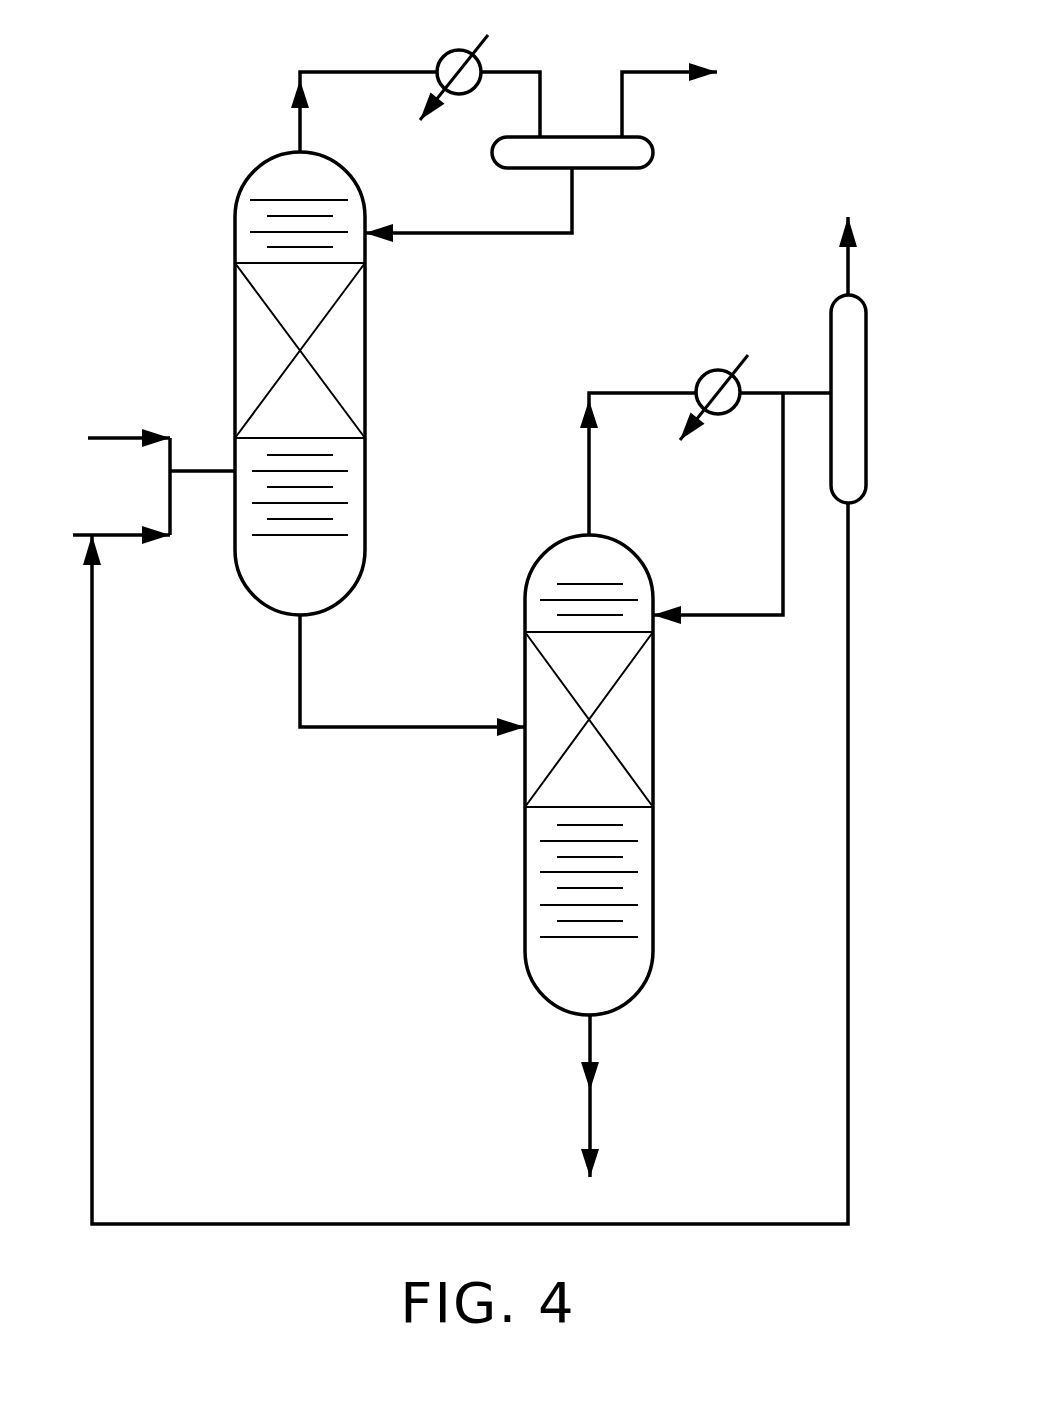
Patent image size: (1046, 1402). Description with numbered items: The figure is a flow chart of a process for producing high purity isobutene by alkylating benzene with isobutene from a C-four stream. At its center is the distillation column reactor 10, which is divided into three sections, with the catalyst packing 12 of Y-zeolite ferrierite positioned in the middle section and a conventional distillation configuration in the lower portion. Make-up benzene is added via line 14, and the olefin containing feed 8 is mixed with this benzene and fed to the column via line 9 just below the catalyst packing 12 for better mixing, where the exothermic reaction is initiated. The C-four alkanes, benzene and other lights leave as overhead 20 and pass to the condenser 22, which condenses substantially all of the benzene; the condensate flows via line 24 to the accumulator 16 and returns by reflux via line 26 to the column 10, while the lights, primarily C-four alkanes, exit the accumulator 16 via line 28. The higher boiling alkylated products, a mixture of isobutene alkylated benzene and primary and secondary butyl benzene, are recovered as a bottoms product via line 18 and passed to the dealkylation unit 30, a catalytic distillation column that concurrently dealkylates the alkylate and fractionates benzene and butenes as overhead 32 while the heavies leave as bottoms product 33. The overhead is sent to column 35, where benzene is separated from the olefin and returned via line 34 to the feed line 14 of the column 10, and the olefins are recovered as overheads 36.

The olefin containing feed 8 is at (118, 438).
The feed line to column 9 is at (207, 470).
The distillation column reactor 10 is at (235, 302).
The catalyst packing 12 is at (365, 333).
The make-up benzene line 14 is at (118, 537).
The accumulator 16 is at (615, 170).
The bottoms line 18 is at (298, 686).
The overhead 20 is at (298, 130).
The condenser 22 is at (459, 50).
The condensate line 24 is at (523, 72).
The reflux line 26 is at (565, 233).
The accumulator overhead line 28 is at (653, 72).
The dealkylation unit 30 is at (525, 877).
The dealkylation unit overhead 32 is at (637, 393).
The heavies bottoms product 33 is at (590, 1118).
The benzene return line 34 is at (850, 705).
The separation column 35 is at (867, 397).
The olefin overheads 36 is at (850, 268).